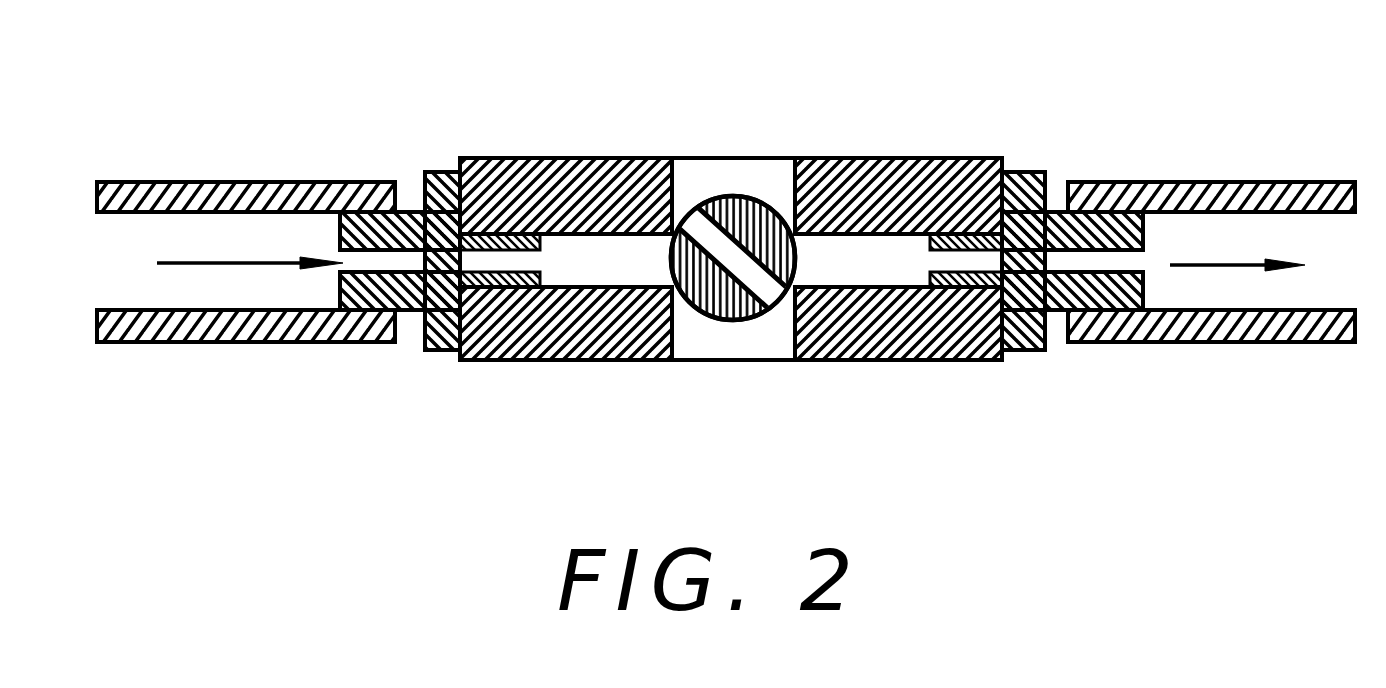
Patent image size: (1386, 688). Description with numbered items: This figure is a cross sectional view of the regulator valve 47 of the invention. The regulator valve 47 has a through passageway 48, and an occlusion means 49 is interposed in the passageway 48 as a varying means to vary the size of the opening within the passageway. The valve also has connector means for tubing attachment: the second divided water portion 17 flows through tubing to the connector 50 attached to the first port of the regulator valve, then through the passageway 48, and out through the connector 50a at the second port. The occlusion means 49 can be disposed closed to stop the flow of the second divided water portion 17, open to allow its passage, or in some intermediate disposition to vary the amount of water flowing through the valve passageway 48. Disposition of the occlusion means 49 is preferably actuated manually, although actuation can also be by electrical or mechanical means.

The second divided water portion 17 is at (210, 263).
The regulator valve 47 is at (595, 158).
The through passageway 48 is at (530, 236).
The occlusion means 49 is at (757, 200).
The connector at port one 50 is at (433, 175).
The connector at port two 50a is at (1022, 175).